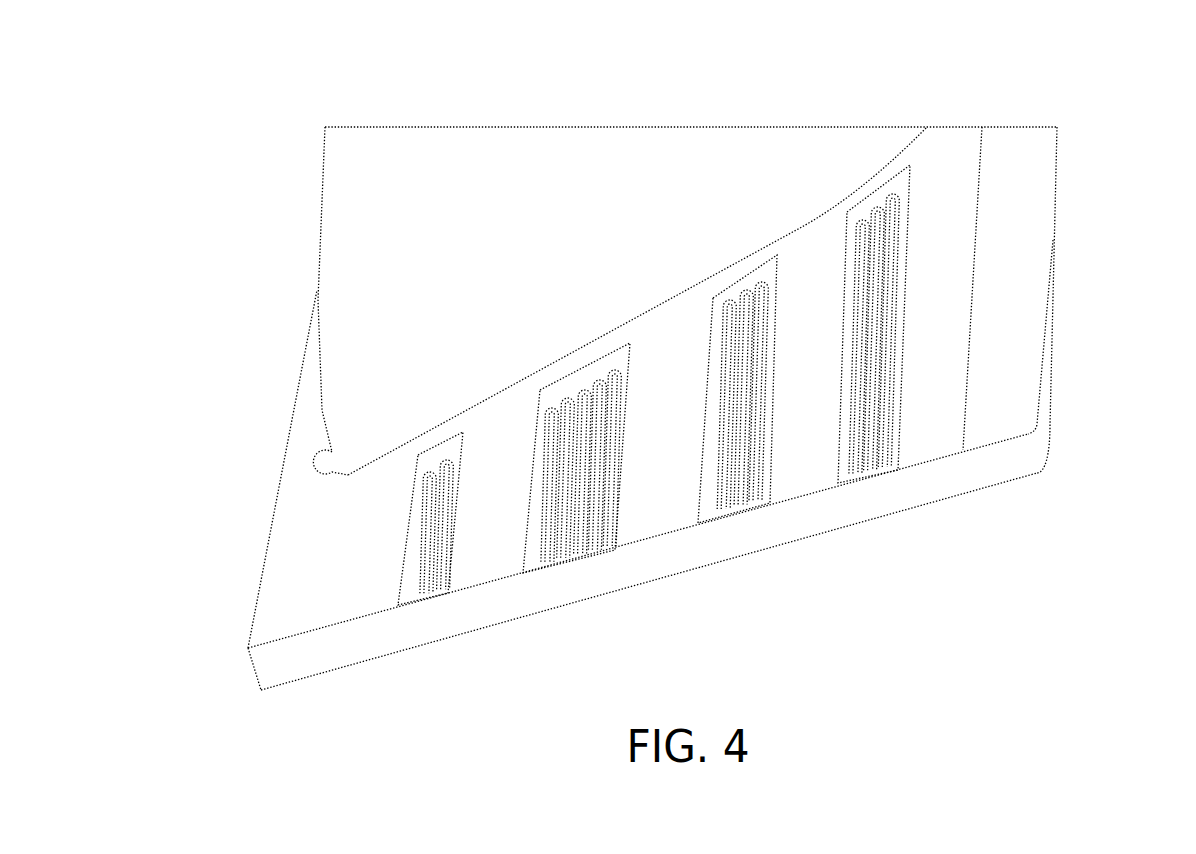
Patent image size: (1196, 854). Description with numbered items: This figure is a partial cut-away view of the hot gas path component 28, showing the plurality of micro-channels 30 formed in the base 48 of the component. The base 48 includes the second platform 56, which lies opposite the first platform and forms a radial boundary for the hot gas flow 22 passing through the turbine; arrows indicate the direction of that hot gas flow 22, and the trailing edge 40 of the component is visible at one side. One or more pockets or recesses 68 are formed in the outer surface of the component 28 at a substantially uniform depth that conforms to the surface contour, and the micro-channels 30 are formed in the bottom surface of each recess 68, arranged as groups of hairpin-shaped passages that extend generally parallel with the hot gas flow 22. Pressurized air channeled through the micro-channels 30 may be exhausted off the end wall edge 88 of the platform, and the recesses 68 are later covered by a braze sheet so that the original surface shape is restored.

The hot gas flow 22 is at (193, 262).
The hot gas path component 28 is at (682, 115).
The micro-channels 30 is at (423, 577).
The trailing edge 40 is at (320, 387).
The base 48 is at (1057, 267).
The second platform 56 is at (973, 420).
The recesses 68 is at (770, 270).
The end wall edge 88 is at (807, 520).